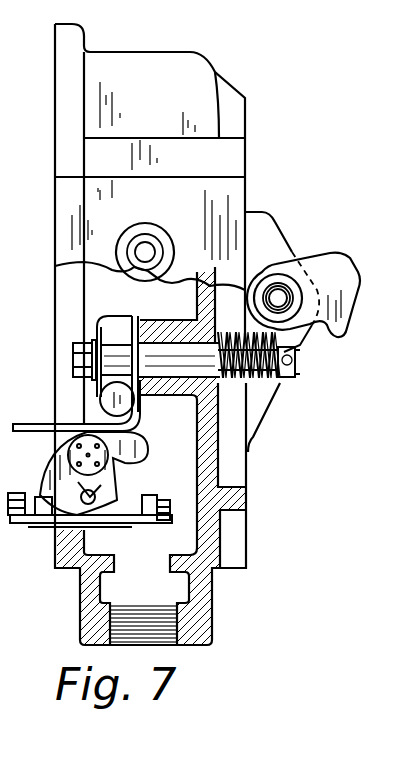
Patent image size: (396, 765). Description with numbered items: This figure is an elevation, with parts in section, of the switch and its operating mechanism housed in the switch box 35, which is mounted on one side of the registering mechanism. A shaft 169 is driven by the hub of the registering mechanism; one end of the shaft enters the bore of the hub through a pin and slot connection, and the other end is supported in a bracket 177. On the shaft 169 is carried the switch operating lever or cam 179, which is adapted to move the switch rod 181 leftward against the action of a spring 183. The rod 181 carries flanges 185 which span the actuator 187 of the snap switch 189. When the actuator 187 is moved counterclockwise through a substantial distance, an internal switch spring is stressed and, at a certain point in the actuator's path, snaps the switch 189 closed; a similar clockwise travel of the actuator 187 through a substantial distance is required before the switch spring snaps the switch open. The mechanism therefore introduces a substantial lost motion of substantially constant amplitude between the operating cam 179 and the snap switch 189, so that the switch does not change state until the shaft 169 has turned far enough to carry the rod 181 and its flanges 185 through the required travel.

The switch box 35 is at (246, 193).
The shaft 169 is at (280, 298).
The bracket 177 is at (284, 246).
The switch operating lever or cam 179 is at (350, 308).
The switch rod 181 is at (297, 372).
The spring 183 is at (264, 388).
The flanges 185 is at (108, 320).
The actuator 187 is at (100, 400).
The snap switch 189 is at (150, 466).